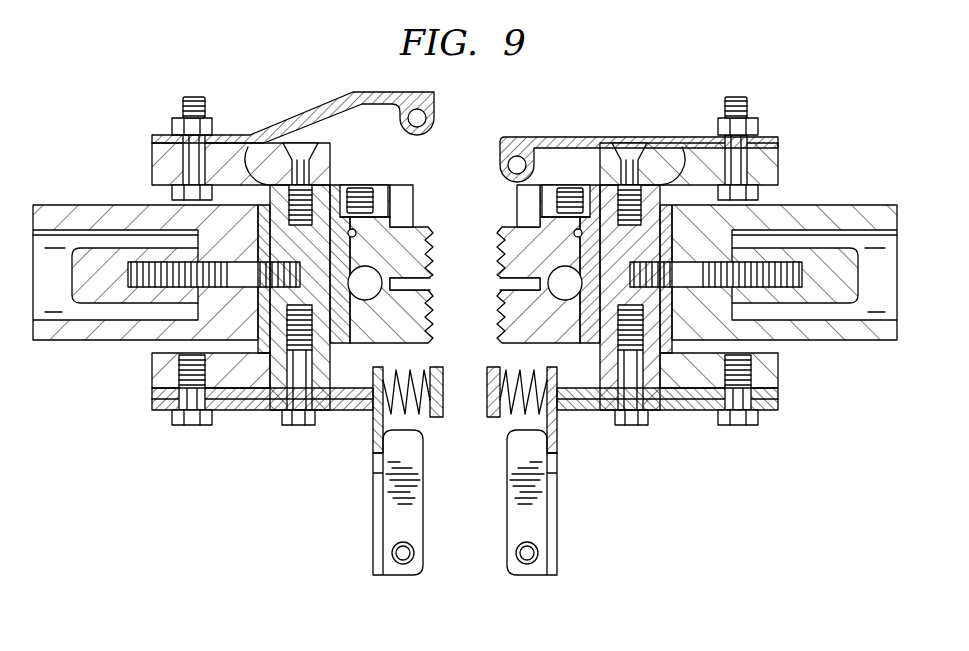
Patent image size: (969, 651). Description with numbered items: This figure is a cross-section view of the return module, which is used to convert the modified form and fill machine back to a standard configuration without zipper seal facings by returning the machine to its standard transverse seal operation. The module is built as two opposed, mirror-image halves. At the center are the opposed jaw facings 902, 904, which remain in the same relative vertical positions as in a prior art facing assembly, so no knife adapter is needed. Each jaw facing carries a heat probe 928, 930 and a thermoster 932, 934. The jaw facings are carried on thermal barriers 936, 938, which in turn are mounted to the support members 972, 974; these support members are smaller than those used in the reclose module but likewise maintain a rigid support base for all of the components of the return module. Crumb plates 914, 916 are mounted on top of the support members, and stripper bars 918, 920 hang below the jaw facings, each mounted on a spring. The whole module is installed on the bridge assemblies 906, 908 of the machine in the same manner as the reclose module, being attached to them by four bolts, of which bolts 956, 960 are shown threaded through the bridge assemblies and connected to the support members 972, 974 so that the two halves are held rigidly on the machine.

The jaw facing 902 is at (426, 220).
The jaw facing 904 is at (518, 348).
The bridge assembly 906 is at (83, 206).
The bridge assembly 908 is at (837, 208).
The crumb plate 914 is at (372, 92).
The crumb plate 916 is at (520, 136).
The stripper bar 918 is at (442, 418).
The stripper bar 920 is at (478, 420).
The heat probe 928 is at (378, 278).
The heat probe 930 is at (503, 297).
The thermoster 932 is at (375, 195).
The thermoster 934 is at (537, 222).
The thermal barrier 936 is at (262, 328).
The thermal barrier 938 is at (597, 178).
The bolt 956 is at (128, 274).
The bolt 960 is at (798, 276).
The support member 972 is at (252, 147).
The support member 974 is at (670, 146).